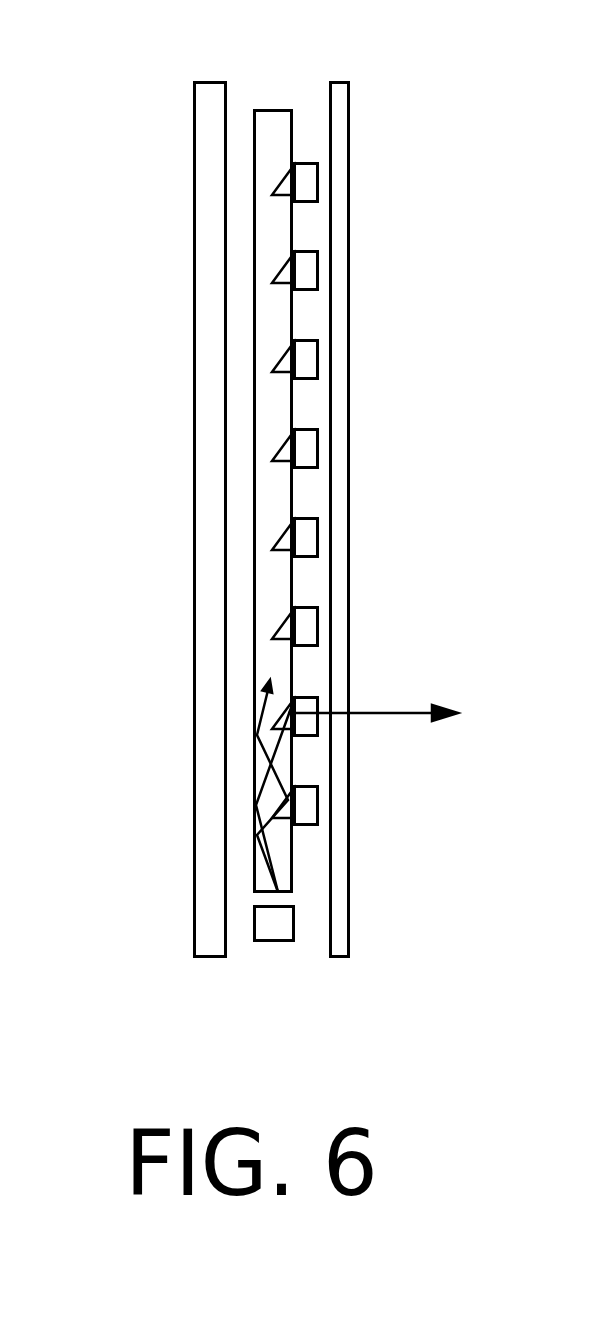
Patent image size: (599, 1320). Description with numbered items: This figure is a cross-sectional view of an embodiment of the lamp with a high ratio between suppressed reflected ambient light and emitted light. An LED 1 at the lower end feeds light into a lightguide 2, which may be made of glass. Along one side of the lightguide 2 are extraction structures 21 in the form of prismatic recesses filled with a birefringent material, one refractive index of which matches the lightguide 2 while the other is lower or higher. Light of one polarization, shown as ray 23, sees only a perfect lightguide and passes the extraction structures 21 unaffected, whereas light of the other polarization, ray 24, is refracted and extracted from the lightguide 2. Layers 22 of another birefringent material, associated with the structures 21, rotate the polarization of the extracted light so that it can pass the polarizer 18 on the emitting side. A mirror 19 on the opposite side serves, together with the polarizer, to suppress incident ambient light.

The LED 1 is at (280, 933).
The lightguide 2 is at (268, 117).
The polarizer 18 is at (343, 948).
The mirror 19 is at (203, 918).
The extraction structures 21 is at (282, 633).
The layers of birefringent material 22 is at (310, 180).
The ray 23 is at (255, 752).
The ray 24 is at (258, 832).